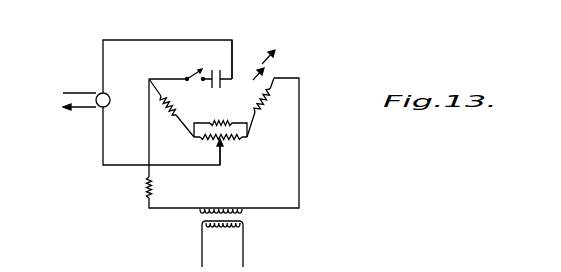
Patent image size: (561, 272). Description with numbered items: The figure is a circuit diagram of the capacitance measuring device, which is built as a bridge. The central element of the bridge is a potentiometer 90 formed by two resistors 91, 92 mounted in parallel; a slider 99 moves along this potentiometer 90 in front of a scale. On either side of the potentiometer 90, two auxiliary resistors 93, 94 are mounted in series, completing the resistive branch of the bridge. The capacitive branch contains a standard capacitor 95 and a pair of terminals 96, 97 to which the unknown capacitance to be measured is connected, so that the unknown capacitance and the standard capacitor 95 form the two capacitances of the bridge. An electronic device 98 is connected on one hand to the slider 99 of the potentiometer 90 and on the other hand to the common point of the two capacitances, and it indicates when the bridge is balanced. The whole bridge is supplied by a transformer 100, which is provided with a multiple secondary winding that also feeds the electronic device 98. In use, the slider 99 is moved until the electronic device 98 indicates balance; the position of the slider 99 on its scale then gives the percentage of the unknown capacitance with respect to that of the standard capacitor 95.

The potentiometer 90 is at (248, 138).
The resistor 91 is at (221, 121).
The resistor 92 is at (208, 138).
The auxiliary resistor 93 is at (172, 110).
The auxiliary resistor 94 is at (261, 118).
The standard capacitor 95 is at (216, 70).
The terminal 96 is at (235, 75).
The terminal 97 is at (275, 78).
The electronic device 98 is at (98, 95).
The slider 99 is at (223, 158).
The transformer 100 is at (243, 219).